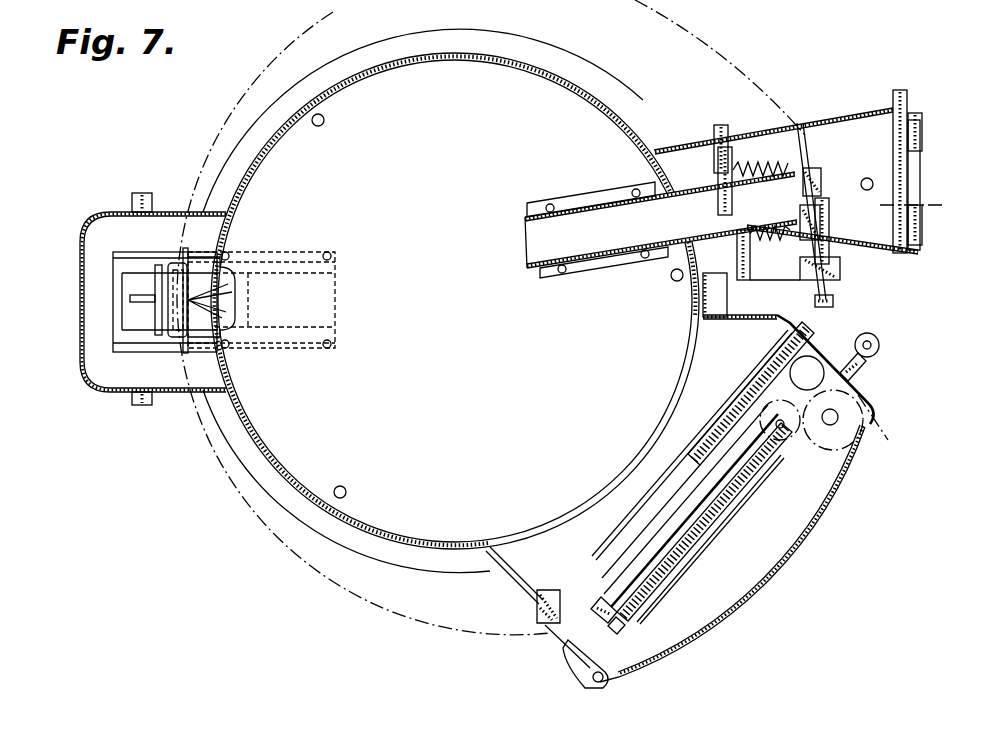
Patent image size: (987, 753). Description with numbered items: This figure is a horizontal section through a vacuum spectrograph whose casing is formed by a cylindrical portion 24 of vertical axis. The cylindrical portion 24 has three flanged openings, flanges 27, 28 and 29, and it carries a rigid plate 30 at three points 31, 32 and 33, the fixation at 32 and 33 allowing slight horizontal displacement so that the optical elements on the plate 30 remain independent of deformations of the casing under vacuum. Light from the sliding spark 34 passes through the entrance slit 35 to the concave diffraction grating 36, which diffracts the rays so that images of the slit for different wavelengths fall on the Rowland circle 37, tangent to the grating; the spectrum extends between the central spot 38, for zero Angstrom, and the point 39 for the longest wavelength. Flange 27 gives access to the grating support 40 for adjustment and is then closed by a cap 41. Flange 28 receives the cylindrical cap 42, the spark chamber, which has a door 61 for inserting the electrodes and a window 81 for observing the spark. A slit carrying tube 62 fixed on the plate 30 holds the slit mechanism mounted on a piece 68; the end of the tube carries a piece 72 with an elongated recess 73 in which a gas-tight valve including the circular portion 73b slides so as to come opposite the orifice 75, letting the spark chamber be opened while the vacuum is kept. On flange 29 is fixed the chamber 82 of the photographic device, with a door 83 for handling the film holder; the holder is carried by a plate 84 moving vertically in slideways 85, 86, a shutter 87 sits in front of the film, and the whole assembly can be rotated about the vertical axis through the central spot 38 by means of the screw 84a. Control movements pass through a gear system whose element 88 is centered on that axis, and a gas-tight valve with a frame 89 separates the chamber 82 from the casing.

The cylindrical portion 24 is at (622, 92).
The flange 27 is at (152, 195).
The flange 28 is at (715, 128).
The flange 29 is at (536, 608).
The rigid plate 30 is at (270, 412).
The point 31 is at (324, 120).
The point 32 is at (345, 487).
The point 33 is at (671, 276).
The sliding spark 34 is at (871, 180).
The entrance slit 35 is at (825, 178).
The diffraction grating 36 is at (186, 298).
The Rowland circle 37 is at (300, 550).
The central spot 38 is at (838, 418).
The point 39 is at (725, 562).
The support 40 is at (135, 310).
The cap 41 is at (82, 262).
The cylindrical cap 42 is at (760, 132).
The door 61 is at (907, 110).
The slit carrying tube 62 is at (586, 212).
The piece 68 is at (829, 238).
The piece 72 is at (771, 288).
The elongated recess 73 is at (806, 160).
The circular portion 73b is at (822, 222).
The orifice 75 is at (762, 208).
The window 81 is at (922, 152).
The chamber or cap 82 is at (595, 628).
The door 83 is at (797, 533).
The plate 84 is at (672, 574).
The screw 84a is at (620, 632).
The slideway 85 is at (618, 612).
The slideway 86 is at (862, 382).
The shutter 87 is at (748, 488).
The gear element 88 is at (840, 442).
The frame 89 is at (623, 550).